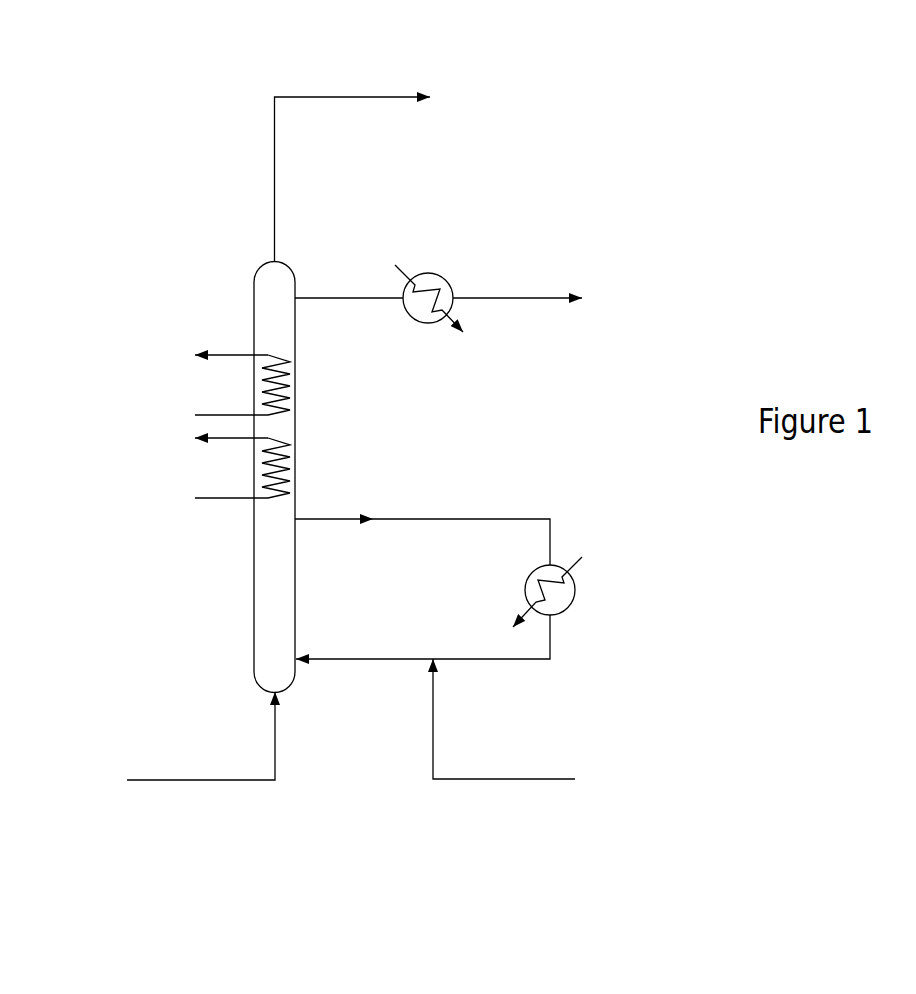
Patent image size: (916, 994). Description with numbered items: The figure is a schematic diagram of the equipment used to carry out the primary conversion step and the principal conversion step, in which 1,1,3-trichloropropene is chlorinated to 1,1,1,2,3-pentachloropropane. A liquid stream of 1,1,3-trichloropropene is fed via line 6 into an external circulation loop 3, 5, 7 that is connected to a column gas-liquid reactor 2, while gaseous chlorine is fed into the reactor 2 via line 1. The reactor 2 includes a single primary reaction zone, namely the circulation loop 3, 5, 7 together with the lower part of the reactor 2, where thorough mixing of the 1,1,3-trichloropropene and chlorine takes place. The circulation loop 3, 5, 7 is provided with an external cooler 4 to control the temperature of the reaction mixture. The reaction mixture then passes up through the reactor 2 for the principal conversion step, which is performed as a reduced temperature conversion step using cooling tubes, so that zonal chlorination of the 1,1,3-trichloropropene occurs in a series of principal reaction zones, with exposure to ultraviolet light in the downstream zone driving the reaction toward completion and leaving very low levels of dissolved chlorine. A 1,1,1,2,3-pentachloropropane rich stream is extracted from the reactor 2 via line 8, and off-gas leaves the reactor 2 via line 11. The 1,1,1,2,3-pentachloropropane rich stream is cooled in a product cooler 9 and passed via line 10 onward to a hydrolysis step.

The gaseous chlorine line 1 is at (183, 787).
The column gas-liquid reactor 2 is at (238, 477).
The external circulation loop 3 is at (452, 515).
The external cooler 4 is at (584, 603).
The external circulation loop 5 is at (500, 663).
The 1,1,3-trichloropropene feed stream 6 is at (517, 787).
The external circulation loop 7 is at (378, 662).
The 1,1,1,2,3-pentachloropropane-rich stream 8 is at (334, 290).
The product cooler 9 is at (433, 254).
The 1,1,1,2,3-pentachloropropane-rich stream 10 is at (515, 292).
The off-gas 11 is at (267, 157).